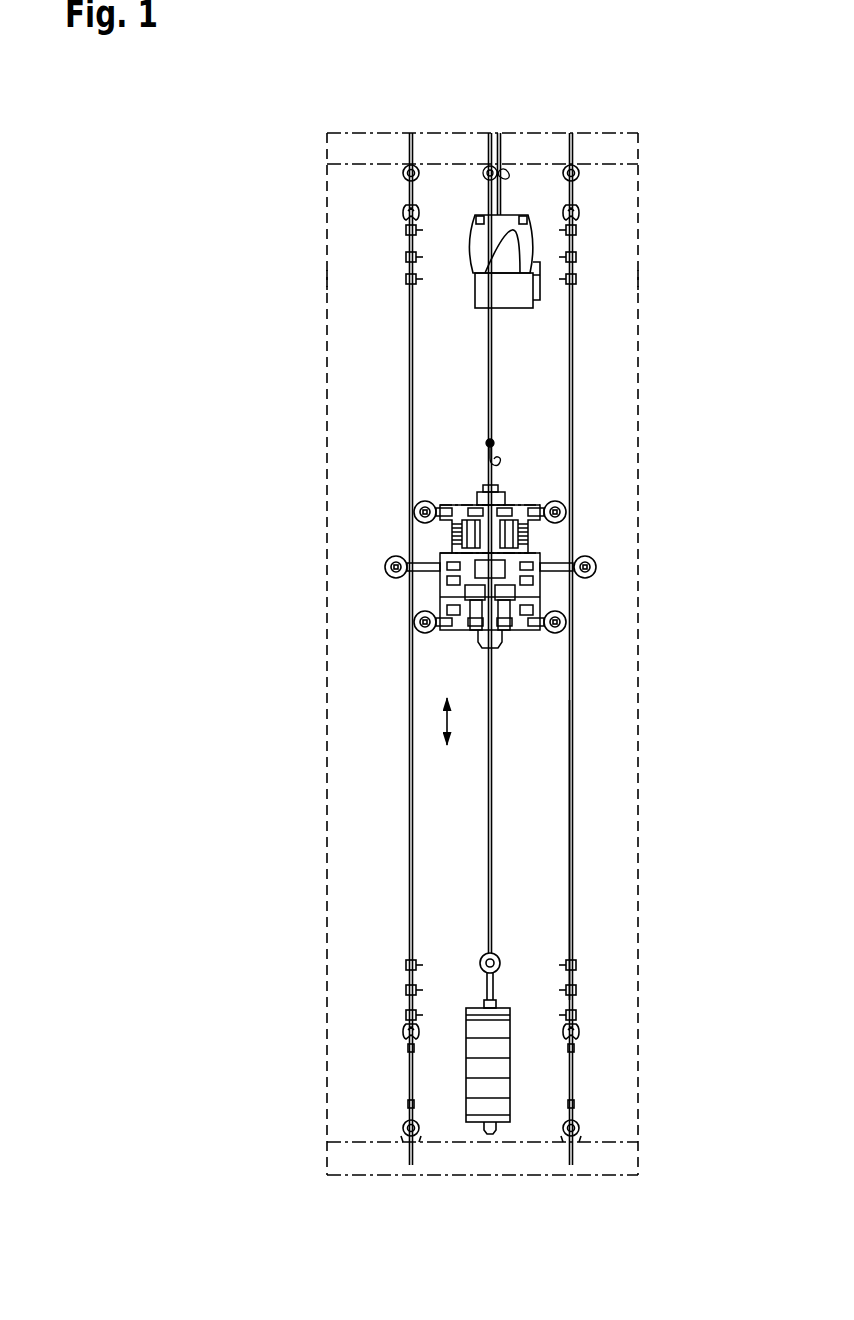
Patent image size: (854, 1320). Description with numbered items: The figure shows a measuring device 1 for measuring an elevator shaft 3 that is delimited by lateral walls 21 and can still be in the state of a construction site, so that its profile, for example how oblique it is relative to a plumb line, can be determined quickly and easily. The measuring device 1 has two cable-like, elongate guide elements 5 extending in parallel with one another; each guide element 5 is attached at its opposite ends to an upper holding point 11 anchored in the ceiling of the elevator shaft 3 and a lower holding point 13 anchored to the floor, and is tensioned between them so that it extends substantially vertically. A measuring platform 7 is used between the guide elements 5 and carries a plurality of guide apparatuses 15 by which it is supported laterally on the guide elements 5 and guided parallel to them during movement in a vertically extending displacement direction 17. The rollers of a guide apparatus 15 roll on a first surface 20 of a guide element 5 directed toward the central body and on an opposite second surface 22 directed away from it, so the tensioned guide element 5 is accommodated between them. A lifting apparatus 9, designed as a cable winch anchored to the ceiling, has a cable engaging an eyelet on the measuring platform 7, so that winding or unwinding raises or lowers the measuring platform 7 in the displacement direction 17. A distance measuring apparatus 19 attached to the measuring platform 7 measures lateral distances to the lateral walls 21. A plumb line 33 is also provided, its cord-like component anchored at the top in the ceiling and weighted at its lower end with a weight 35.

The measuring device 1 is at (464, 293).
The elevator shaft 3 is at (352, 890).
The guide elements 5 is at (410, 455).
The measuring platform 7 is at (541, 484).
The lifting apparatus 9 is at (512, 303).
The upper holding point 11 is at (378, 179).
The lower holding point 13 is at (380, 1120).
The guide apparatuses 15 is at (379, 566).
The displacement direction 17 is at (447, 722).
The distance measuring apparatus 19 is at (510, 646).
The first surface 20 is at (565, 763).
The lateral walls 21 is at (327, 279).
The second surface 22 is at (574, 722).
The plumb line 33 is at (495, 861).
The weight 35 is at (500, 1110).